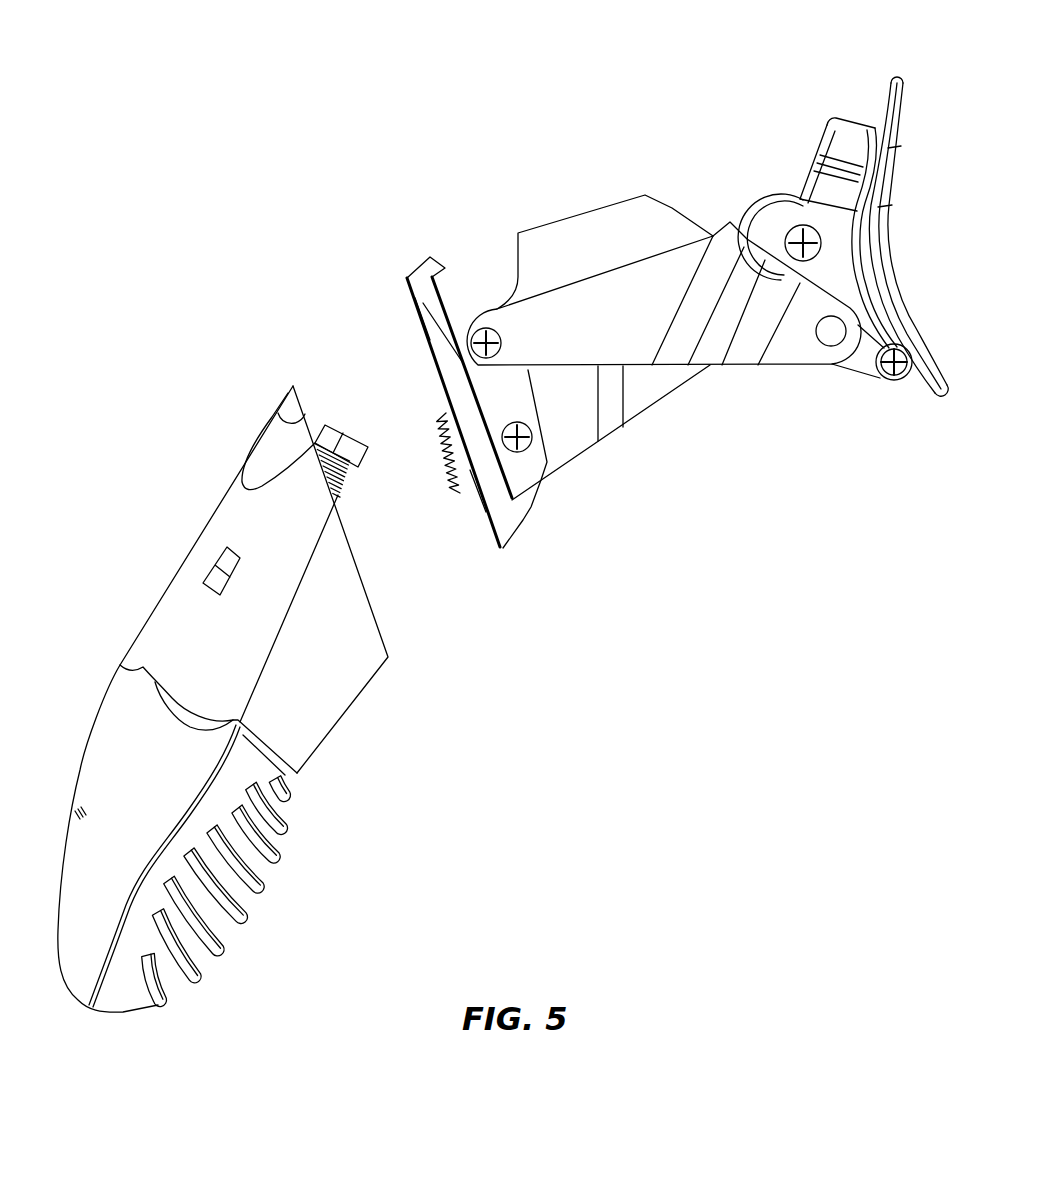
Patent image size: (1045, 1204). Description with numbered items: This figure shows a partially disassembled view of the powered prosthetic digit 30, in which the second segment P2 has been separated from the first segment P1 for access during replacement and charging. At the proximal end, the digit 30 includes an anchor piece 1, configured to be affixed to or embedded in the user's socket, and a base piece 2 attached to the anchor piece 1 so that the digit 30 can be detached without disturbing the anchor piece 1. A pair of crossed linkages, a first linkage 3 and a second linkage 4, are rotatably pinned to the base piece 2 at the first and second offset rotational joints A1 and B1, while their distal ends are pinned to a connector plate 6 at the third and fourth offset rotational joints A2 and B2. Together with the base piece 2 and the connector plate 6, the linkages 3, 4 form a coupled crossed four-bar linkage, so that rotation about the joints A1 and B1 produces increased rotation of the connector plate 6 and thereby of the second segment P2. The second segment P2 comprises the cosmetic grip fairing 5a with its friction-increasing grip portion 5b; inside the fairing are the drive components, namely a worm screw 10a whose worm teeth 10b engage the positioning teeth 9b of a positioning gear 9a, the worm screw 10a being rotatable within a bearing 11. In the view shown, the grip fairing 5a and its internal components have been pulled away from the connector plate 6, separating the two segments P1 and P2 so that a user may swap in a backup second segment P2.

The digit 30 is at (231, 173).
The first segment P1 is at (577, 173).
The second segment P2 is at (121, 515).
The anchor piece 1 is at (900, 87).
The base piece 2 is at (856, 125).
The first linkage 3 is at (557, 238).
The second linkage 4 is at (642, 395).
The grip fairing 5a is at (232, 518).
The grip portion 5b is at (260, 860).
The connector plate 6 is at (423, 280).
The positioning gear 9a is at (471, 482).
The positioning teeth 9b is at (444, 412).
The worm screw 10a is at (358, 468).
The worm teeth 10b is at (348, 498).
The first bearing 11 is at (328, 424).
The first offset rotational joint A1 is at (897, 381).
The third offset rotational joint A2 is at (485, 328).
The second offset rotational joint B1 is at (794, 229).
The fourth offset rotational joint B2 is at (528, 449).